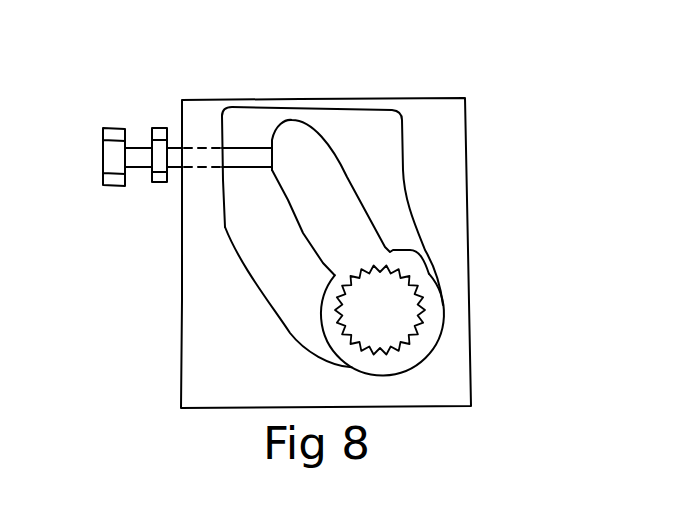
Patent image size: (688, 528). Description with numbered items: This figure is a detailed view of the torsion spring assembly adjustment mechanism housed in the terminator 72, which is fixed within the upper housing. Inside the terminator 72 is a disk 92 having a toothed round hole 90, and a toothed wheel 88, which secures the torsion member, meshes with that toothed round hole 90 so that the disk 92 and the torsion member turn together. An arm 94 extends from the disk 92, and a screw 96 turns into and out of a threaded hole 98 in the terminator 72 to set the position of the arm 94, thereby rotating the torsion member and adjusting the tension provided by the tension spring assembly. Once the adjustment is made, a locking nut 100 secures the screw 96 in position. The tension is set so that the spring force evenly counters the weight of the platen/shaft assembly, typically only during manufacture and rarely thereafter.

The terminator 72 is at (436, 99).
The toothed wheel 88 is at (382, 312).
The toothed round hole 90 is at (440, 337).
The disk 92 is at (417, 272).
The arm 94 is at (350, 192).
The screw 96 is at (103, 165).
The threaded hole 98 is at (182, 167).
The locking nut 100 is at (158, 127).